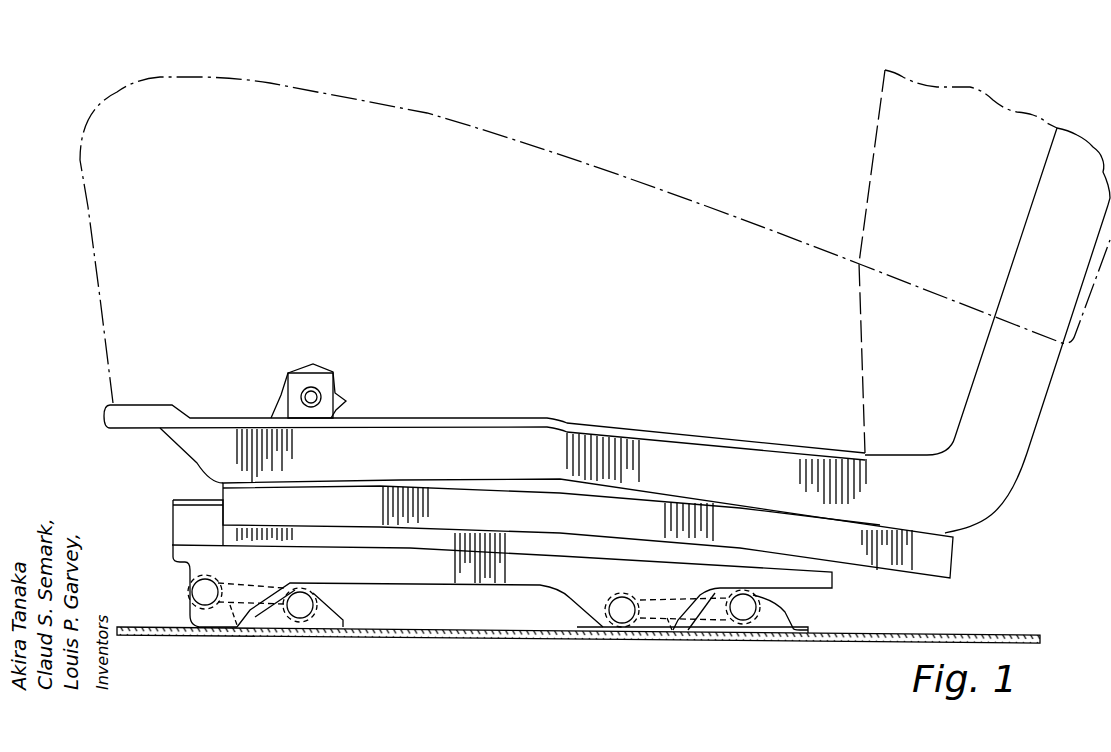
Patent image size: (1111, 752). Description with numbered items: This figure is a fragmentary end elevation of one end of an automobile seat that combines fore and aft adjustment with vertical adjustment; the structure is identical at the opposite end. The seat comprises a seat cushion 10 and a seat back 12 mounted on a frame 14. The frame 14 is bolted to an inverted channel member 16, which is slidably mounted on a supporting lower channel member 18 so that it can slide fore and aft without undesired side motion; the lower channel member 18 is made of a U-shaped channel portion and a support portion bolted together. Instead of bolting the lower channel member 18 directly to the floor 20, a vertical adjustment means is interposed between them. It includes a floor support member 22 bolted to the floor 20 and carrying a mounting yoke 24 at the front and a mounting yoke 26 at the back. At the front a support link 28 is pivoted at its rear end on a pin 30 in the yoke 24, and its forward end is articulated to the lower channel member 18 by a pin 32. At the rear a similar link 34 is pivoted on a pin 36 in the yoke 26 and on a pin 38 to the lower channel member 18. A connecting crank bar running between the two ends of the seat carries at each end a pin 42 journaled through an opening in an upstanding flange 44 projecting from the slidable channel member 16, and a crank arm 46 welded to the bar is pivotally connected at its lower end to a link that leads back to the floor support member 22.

The seat cushion 10 is at (370, 112).
The seat back 12 is at (870, 160).
The frame 14 is at (998, 470).
The inverted channel member 16 is at (233, 497).
The lower channel member 18 is at (182, 535).
The floor 20 is at (185, 627).
The floor support member 22 is at (406, 634).
The mounting yoke 24 is at (330, 612).
The mounting yoke 26 is at (773, 610).
The support link 28 is at (237, 628).
The pin 30 is at (300, 610).
The pin 32 is at (205, 590).
The link 34 is at (671, 622).
The pin 36 is at (736, 610).
The pin 38 is at (622, 613).
The pin 42 is at (318, 396).
The upstanding flange 44 is at (313, 382).
The crank arm 46 is at (283, 408).